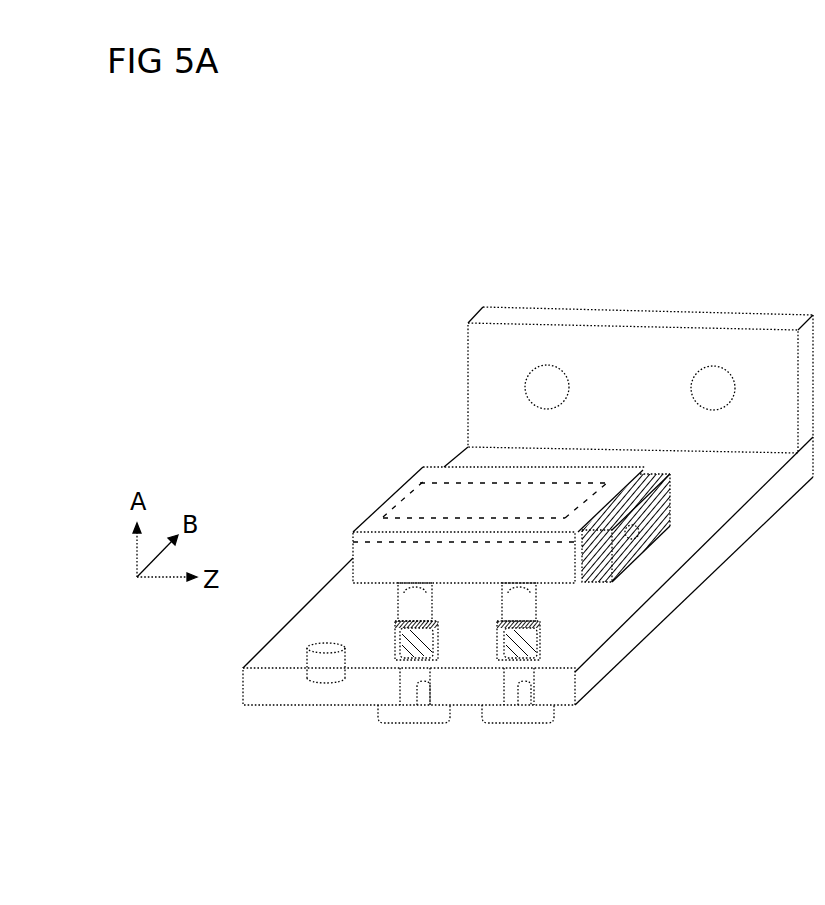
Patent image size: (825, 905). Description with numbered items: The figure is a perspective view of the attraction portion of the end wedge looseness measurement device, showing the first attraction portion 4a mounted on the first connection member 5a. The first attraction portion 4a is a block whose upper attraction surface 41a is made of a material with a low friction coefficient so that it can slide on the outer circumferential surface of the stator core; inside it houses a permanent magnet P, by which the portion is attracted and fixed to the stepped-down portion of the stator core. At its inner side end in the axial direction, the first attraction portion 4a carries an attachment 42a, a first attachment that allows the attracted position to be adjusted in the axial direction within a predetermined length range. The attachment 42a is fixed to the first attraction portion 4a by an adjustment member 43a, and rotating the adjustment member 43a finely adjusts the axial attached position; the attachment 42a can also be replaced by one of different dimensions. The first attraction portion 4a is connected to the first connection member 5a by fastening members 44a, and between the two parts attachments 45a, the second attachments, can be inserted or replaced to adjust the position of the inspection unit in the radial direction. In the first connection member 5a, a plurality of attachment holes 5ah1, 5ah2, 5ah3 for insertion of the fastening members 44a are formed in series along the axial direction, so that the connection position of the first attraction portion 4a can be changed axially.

The first attraction portion 4a is at (380, 507).
The permanent magnet P is at (436, 482).
The attraction surface 41a is at (458, 467).
The attachment (first attachment) 42a is at (625, 567).
The adjustment member 43a is at (640, 538).
The fastening members 44a is at (533, 725).
The attachments (second attachments) 45a is at (543, 635).
The first connection member 5a is at (243, 678).
The attachment hole 5ah1 is at (333, 680).
The attachment hole 5ah2 is at (425, 705).
The attachment hole 5ah3 is at (527, 698).